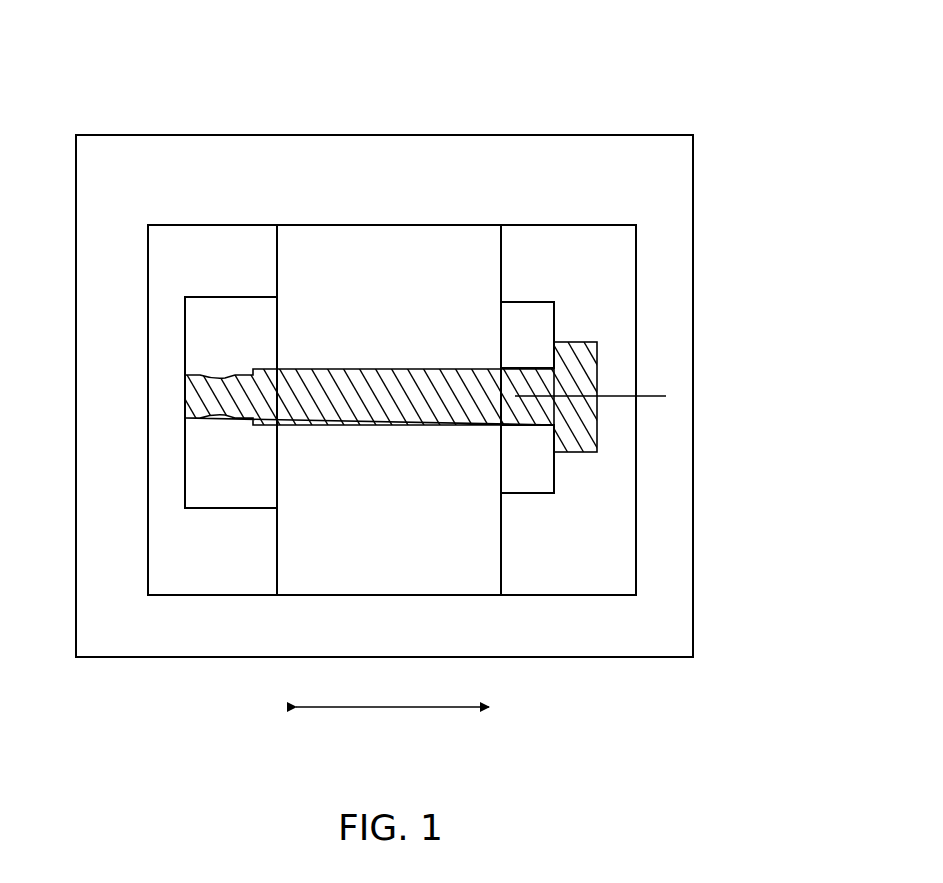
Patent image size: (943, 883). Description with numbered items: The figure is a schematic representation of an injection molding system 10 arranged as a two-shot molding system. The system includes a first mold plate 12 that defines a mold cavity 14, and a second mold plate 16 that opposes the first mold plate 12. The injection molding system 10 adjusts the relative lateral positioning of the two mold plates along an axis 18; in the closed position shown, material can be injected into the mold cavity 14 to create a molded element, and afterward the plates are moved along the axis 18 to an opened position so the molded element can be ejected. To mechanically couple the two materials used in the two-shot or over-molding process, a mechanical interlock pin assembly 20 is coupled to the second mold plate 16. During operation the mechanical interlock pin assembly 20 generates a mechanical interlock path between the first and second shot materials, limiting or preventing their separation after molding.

The injection molding system 10 is at (523, 100).
The first mold plate 12 is at (238, 225).
The mold cavity 14 is at (260, 333).
The second mold plate 16 is at (554, 250).
The axis 18 is at (357, 707).
The mechanical interlock pin assembly 20 is at (603, 335).